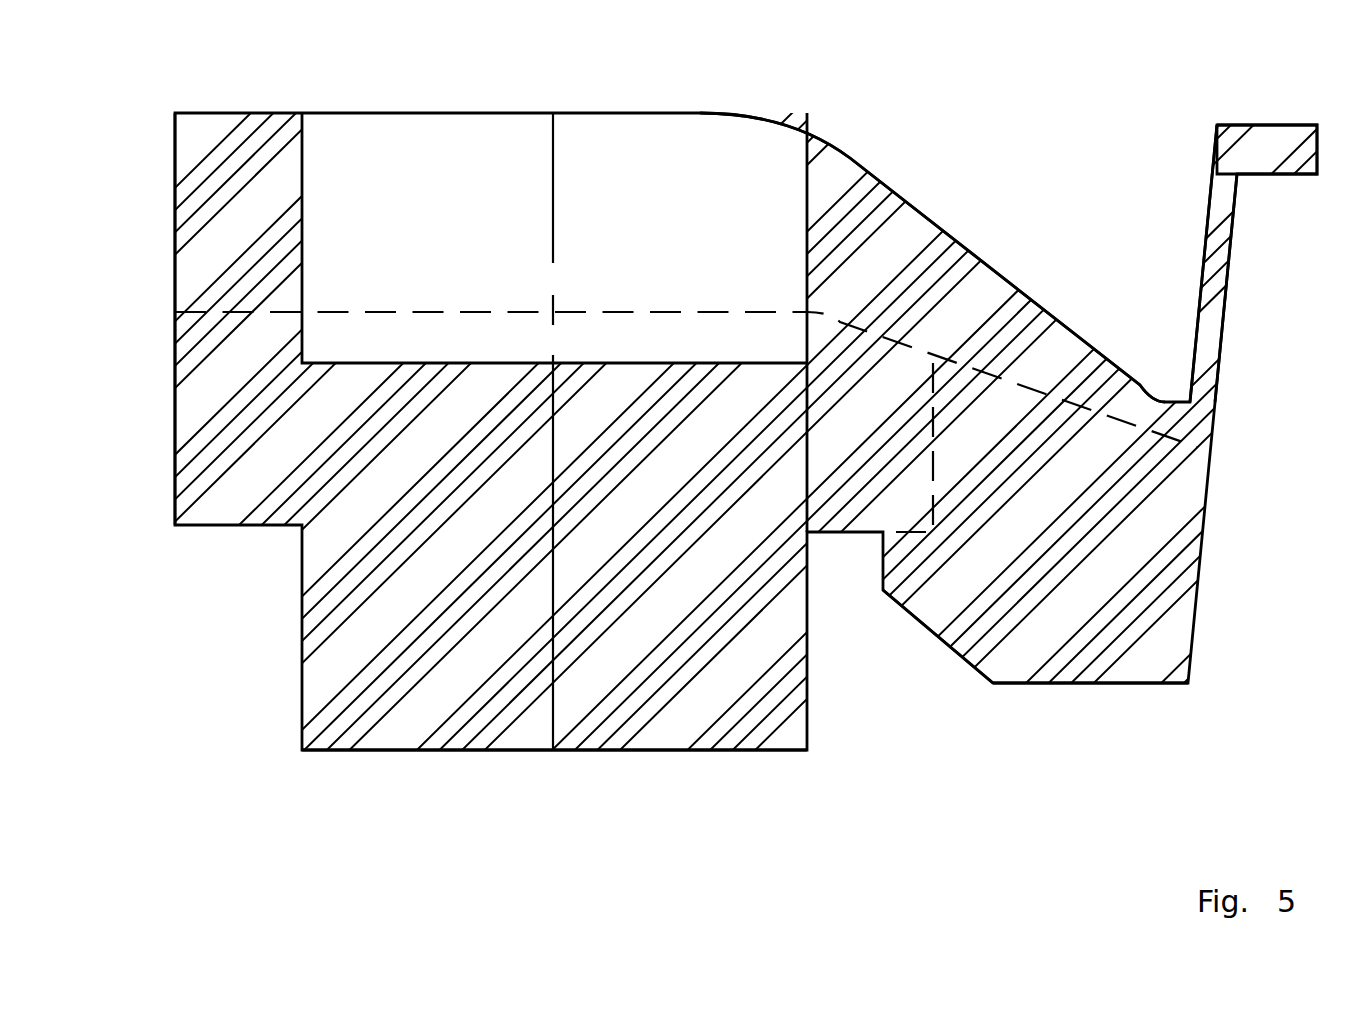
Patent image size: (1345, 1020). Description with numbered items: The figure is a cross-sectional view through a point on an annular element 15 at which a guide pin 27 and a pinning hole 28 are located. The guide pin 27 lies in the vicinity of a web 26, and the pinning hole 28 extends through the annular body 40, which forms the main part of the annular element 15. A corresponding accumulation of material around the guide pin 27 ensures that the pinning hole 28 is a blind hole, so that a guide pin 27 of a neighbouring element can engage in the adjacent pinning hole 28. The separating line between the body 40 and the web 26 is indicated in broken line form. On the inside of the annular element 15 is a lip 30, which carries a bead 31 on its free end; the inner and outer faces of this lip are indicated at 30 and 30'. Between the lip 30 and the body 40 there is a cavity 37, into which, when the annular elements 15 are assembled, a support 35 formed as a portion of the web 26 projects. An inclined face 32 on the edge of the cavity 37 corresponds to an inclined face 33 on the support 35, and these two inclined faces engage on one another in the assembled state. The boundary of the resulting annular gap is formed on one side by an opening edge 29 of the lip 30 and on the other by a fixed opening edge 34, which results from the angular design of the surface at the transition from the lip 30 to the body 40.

The annular element 15 is at (228, 105).
The web 26 is at (190, 278).
The guide pin 27 is at (767, 643).
The pinning hole 28 is at (672, 195).
The opening edge 29 is at (1215, 120).
The lip 30 is at (1247, 263).
The upright stem outer face 30' is at (1264, 288).
The bead 31 is at (1278, 137).
The inclined face 32 is at (920, 203).
The inclined face 33 is at (985, 680).
The fixed opening edge 34 is at (1187, 452).
The support 35 is at (1030, 660).
The cavity 37 is at (1147, 250).
The annular body 40 is at (832, 163).